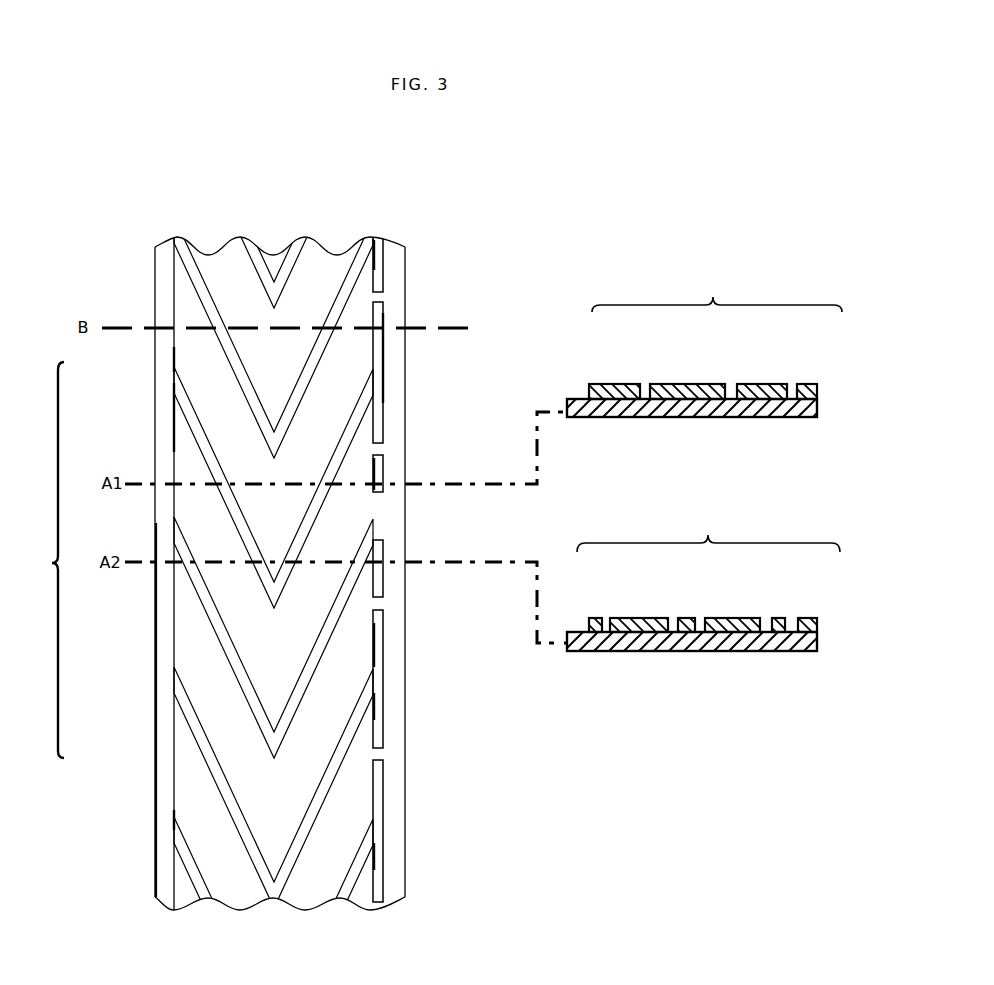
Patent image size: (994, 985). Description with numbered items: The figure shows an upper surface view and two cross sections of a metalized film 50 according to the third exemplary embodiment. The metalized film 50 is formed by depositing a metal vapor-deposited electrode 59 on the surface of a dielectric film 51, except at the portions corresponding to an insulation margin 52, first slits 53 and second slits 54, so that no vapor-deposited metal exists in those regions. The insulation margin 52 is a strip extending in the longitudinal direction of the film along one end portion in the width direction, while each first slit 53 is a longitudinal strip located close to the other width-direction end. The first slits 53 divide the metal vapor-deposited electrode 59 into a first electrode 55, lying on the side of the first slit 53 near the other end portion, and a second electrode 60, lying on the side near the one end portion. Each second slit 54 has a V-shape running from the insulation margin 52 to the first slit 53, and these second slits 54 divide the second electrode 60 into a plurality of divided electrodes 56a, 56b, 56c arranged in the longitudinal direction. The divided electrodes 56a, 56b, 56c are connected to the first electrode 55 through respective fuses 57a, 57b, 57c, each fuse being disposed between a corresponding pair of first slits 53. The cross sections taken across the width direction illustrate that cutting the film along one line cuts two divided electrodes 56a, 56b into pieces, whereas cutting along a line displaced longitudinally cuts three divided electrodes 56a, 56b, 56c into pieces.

The metalized film 50 is at (158, 207).
The dielectric film 51 is at (587, 410).
The insulation margin 52 is at (167, 268).
The first slit 53 is at (380, 348).
The second slit 54 is at (222, 340).
The first electrode 55 is at (393, 270).
The divided electrode 56a is at (218, 400).
The divided electrode 56b is at (238, 595).
The divided electrode 56c is at (223, 713).
The fuse 57a is at (384, 295).
The fuse 57b is at (384, 443).
The fuse 57c is at (378, 600).
The metal vapor-deposited electrode 59 is at (709, 413).
The second electrode 60 is at (52, 563).